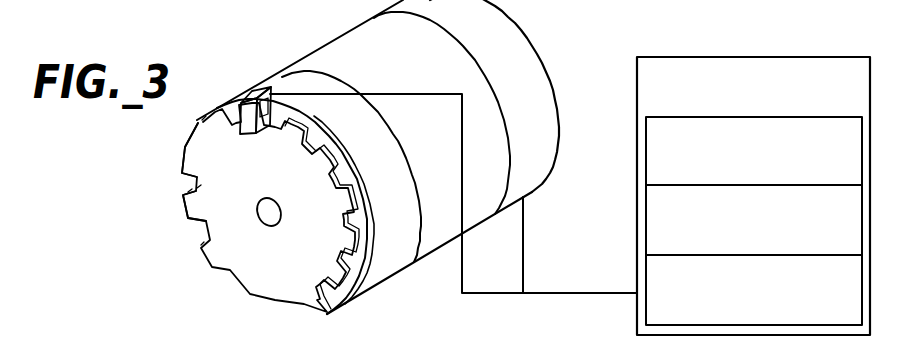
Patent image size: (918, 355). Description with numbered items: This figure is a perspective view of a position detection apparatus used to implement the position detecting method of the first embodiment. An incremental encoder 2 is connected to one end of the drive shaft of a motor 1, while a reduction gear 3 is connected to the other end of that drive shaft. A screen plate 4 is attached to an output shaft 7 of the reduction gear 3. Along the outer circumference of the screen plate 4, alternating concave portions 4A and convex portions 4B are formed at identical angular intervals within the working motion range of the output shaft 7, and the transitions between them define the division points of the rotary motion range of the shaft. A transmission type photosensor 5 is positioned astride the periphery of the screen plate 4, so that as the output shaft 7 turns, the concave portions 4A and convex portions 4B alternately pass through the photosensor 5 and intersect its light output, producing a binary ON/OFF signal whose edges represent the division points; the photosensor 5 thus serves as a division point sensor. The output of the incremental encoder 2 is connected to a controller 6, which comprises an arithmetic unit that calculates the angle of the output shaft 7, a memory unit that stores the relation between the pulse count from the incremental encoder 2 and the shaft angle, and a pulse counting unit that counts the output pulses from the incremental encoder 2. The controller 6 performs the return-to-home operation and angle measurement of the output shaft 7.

The motor 1 is at (343, 45).
The incremental encoder 2 is at (508, 43).
The reduction gear 3 is at (377, 277).
The screen plate 4 is at (277, 287).
The concave portions 4A is at (210, 243).
The convex portions 4B is at (197, 148).
The transmission type photosensor 5 is at (250, 88).
The controller 6 is at (658, 57).
The output shaft 7 is at (268, 227).